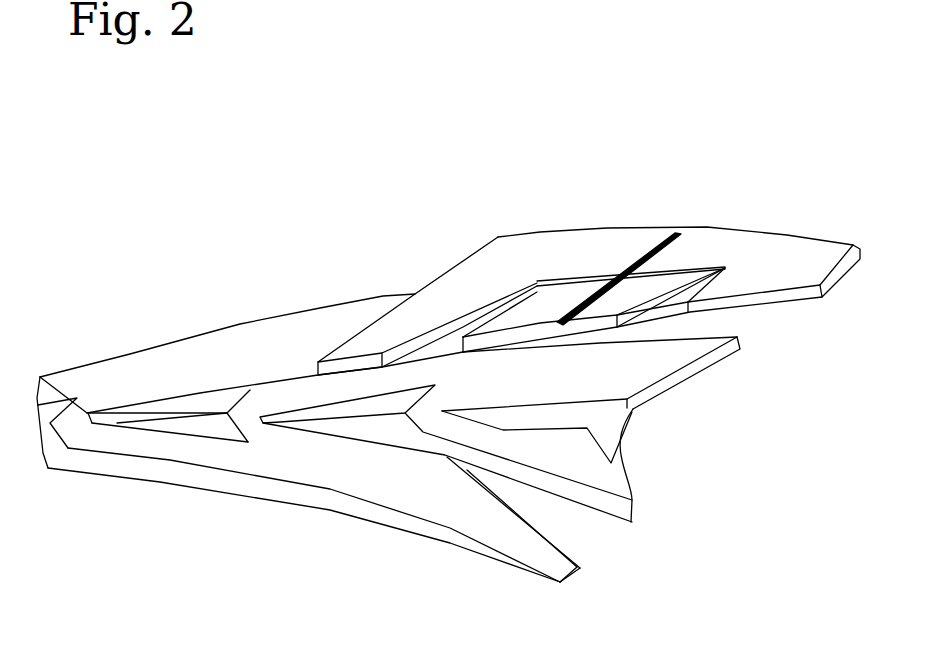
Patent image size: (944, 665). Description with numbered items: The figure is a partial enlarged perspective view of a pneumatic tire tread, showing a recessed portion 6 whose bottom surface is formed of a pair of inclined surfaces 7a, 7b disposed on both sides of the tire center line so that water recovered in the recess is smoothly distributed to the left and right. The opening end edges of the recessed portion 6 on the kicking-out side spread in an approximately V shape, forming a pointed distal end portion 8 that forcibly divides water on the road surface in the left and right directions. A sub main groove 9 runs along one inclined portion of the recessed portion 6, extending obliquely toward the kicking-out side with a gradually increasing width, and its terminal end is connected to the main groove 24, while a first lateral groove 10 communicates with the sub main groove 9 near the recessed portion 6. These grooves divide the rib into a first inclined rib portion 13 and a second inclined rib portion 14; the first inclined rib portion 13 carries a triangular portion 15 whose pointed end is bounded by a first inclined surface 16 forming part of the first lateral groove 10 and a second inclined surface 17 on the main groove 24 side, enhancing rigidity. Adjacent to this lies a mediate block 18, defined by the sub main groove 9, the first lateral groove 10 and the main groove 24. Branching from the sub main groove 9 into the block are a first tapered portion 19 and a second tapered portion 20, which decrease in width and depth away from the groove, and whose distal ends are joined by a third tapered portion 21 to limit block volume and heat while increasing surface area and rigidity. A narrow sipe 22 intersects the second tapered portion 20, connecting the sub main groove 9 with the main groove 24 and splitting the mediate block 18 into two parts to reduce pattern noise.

The recessed portion 6 is at (132, 402).
The inclined surface 7a is at (192, 407).
The inclined surface 7b is at (167, 430).
The distal end portion 8 is at (245, 405).
The sub main groove 9 is at (580, 340).
The first lateral groove 10 is at (340, 332).
The first inclined rib portion 13 is at (327, 477).
The second inclined rib portion 14 is at (313, 393).
The triangular portion 15 is at (487, 515).
The first inclined surface 16 is at (567, 543).
The second inclined surface 17 is at (568, 572).
The mediate block 18 is at (790, 243).
The first tapered portion 19 is at (450, 340).
The second tapered portion 20 is at (678, 300).
The third tapered portion 21 is at (585, 280).
The sipe 22 is at (650, 248).
The main groove 24 is at (383, 295).